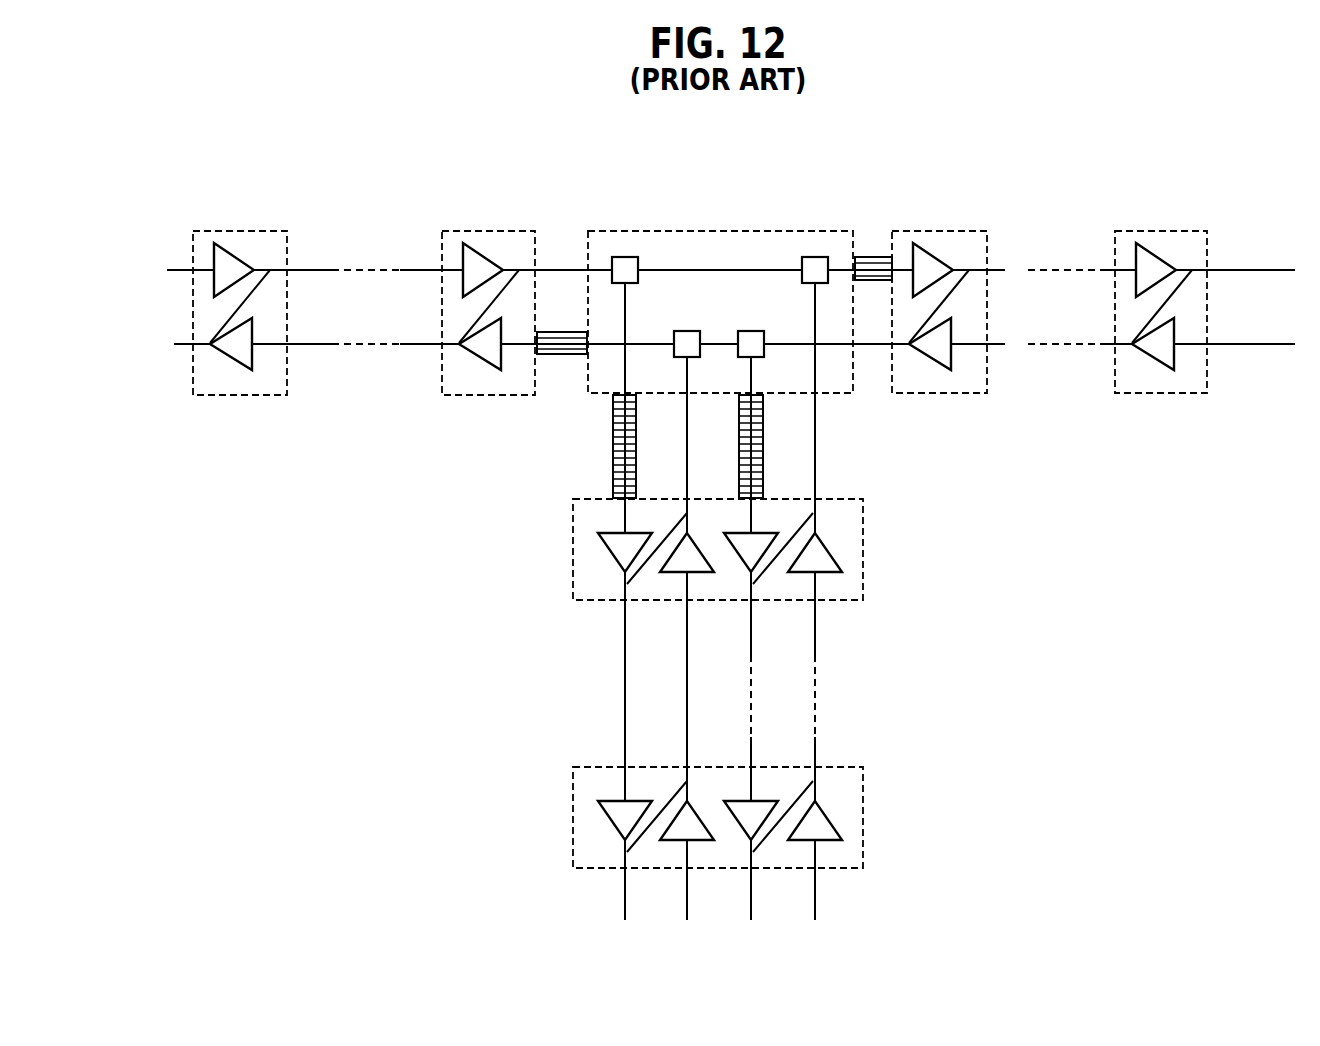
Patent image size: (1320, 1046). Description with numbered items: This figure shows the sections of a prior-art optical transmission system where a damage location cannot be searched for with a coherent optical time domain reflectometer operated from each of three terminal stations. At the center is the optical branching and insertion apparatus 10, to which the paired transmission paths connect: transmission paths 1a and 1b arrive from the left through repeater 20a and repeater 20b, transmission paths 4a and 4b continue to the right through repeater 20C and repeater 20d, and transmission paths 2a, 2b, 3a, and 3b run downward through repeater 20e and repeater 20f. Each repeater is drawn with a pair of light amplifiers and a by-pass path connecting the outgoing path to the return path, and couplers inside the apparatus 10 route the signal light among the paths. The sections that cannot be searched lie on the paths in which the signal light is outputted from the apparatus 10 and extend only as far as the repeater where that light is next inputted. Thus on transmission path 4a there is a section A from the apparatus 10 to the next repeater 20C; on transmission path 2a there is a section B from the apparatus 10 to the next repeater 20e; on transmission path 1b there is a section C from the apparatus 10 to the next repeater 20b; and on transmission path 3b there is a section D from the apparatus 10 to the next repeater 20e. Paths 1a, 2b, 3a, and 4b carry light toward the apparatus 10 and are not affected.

The optical branching and insertion apparatus 10 is at (723, 231).
The repeater 20a is at (245, 230).
The repeater 20b is at (495, 230).
The repeater 20C is at (941, 230).
The repeater 20d is at (1164, 230).
The repeater 20e is at (573, 528).
The repeater 20f is at (573, 792).
The transmission path 1a is at (311, 268).
The transmission path 1b is at (306, 347).
The transmission path 2a is at (622, 609).
The transmission path 2b is at (684, 609).
The transmission path 3a is at (818, 609).
The transmission path 3b is at (754, 609).
The transmission path 4a is at (1009, 267).
The transmission path 4b is at (1003, 347).
The section A is at (873, 253).
The section B is at (611, 446).
The section C is at (562, 365).
The section D is at (736, 446).